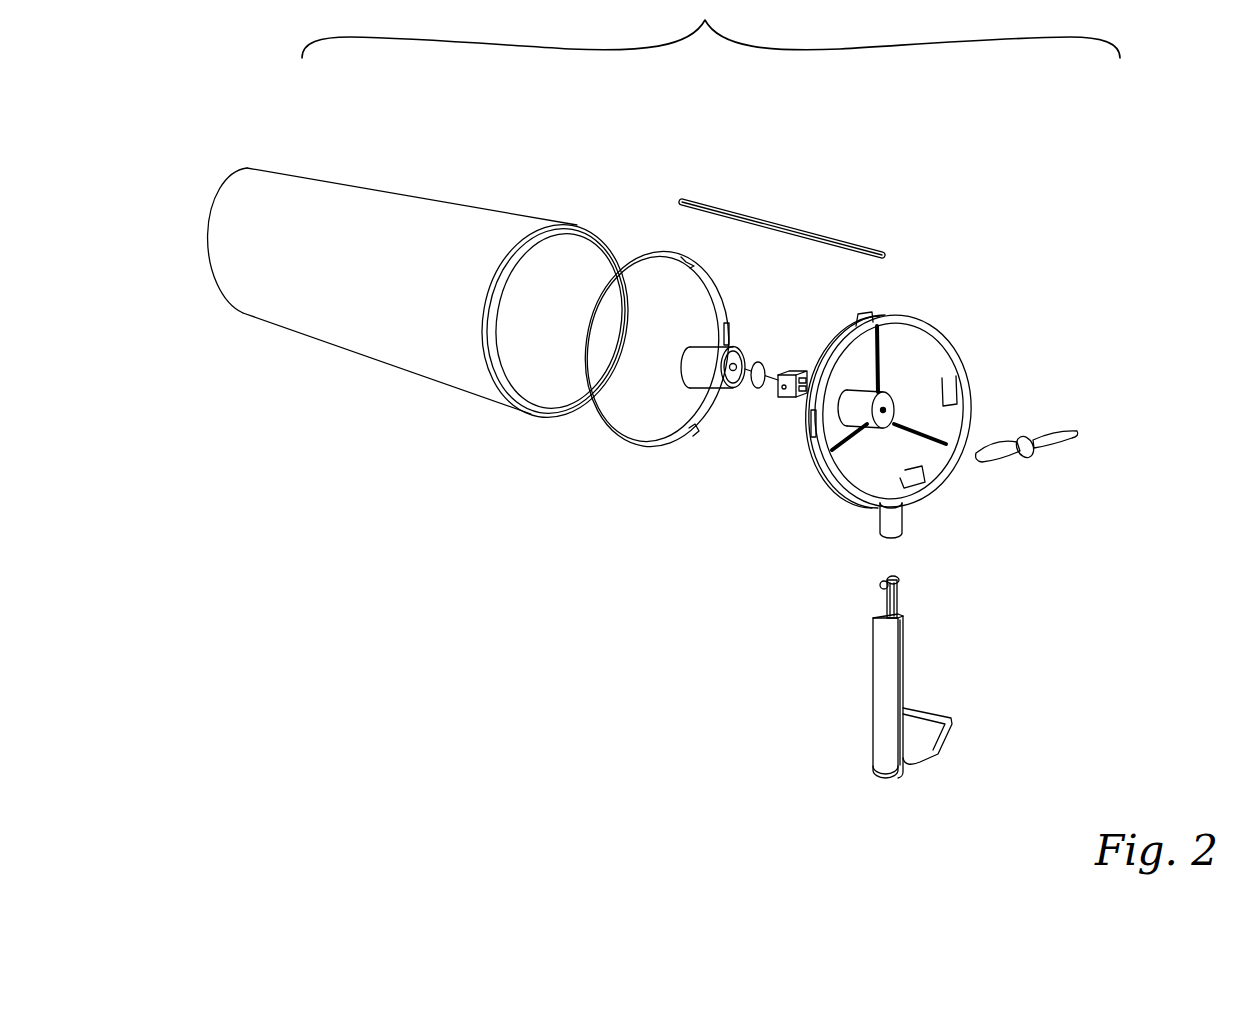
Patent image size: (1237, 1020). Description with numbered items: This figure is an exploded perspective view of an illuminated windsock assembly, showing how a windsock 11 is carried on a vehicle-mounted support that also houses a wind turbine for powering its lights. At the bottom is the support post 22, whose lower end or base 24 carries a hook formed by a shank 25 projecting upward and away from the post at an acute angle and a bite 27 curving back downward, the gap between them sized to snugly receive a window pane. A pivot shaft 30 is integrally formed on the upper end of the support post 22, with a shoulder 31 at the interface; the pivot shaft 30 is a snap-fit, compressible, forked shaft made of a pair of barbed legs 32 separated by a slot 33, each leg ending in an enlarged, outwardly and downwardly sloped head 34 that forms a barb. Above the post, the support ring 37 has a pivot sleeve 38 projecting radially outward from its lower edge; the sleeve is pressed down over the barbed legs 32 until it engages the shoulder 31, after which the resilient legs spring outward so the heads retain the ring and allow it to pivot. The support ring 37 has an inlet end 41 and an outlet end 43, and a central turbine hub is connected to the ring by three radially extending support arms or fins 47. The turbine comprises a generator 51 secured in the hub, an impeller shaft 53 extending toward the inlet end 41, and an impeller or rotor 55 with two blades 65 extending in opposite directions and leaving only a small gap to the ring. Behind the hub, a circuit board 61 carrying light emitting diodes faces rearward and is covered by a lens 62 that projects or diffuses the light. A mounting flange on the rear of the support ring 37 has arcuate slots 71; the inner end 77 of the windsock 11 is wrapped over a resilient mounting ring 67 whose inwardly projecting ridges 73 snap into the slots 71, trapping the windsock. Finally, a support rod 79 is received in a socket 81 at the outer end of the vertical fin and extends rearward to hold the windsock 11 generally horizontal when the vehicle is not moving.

The windsock 11 is at (378, 366).
The inner end 77 is at (547, 418).
The mounting ring 67 is at (605, 433).
The ridges 73 is at (672, 252).
The lens 62 is at (690, 358).
The circuit board 61 is at (757, 362).
The impeller shaft 53 is at (799, 372).
The generator 51 is at (781, 373).
The support rod 79 is at (742, 212).
The support ring 37 is at (896, 402).
The socket 81 is at (860, 312).
The inlet end 41 is at (952, 343).
The support arms or fins 47 is at (913, 418).
The outlet end 43 is at (816, 465).
The slots 71 is at (918, 478).
The pivot sleeve 38 is at (903, 523).
The impeller or rotor 55 is at (1051, 474).
The blades 65 is at (997, 457).
The support post 22 is at (905, 681).
The slot 33 is at (890, 582).
The head 34 is at (904, 578).
The barbed legs 32 is at (884, 603).
The pivot shaft 30 is at (884, 612).
The shoulder 31 is at (905, 621).
The bite 27 is at (950, 736).
The shank 25 is at (916, 745).
The lower end or base 24 is at (893, 777).